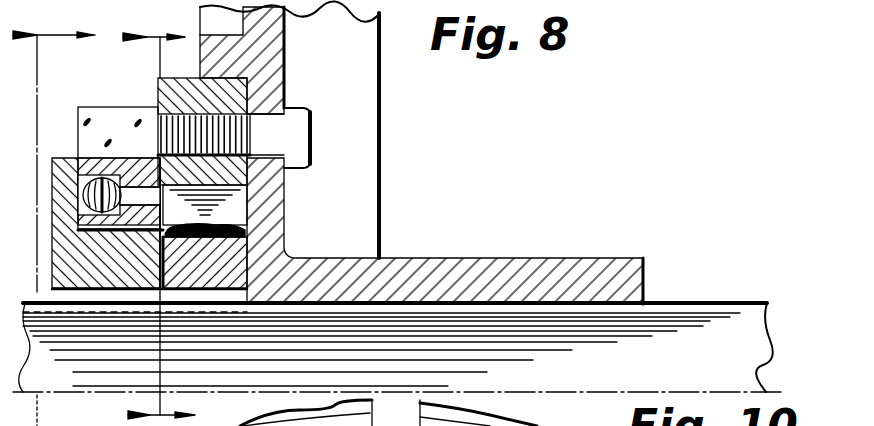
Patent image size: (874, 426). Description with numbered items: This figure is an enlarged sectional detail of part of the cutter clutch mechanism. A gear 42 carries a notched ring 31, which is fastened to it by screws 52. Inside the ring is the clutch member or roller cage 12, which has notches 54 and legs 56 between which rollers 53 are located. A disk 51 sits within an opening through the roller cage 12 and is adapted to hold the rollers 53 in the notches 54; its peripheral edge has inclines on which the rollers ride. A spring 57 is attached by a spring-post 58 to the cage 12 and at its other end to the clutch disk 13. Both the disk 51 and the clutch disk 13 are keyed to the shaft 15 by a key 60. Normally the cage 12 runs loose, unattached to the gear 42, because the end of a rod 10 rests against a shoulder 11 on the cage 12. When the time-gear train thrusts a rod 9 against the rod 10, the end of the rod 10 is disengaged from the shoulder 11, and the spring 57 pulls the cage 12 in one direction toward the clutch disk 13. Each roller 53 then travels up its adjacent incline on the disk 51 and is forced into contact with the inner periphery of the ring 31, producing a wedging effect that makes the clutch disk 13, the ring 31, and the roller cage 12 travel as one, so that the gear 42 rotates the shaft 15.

The rod 9 is at (171, 216).
The rod 10 is at (57, 215).
The shoulder 11 is at (103, 114).
The clutch member 12 is at (77, 157).
The clutch disk 13 is at (62, 237).
The shaft 15 is at (723, 310).
The notched ring 31 is at (183, 152).
The gear 42 is at (367, 152).
The disk 51 is at (247, 240).
The screws 52 is at (302, 135).
The rollers 53 is at (238, 205).
The notches 54 is at (225, 106).
The legs 56 is at (284, 208).
The spring 57 is at (115, 184).
The spring-post 58 is at (143, 193).
The key 60 is at (62, 295).